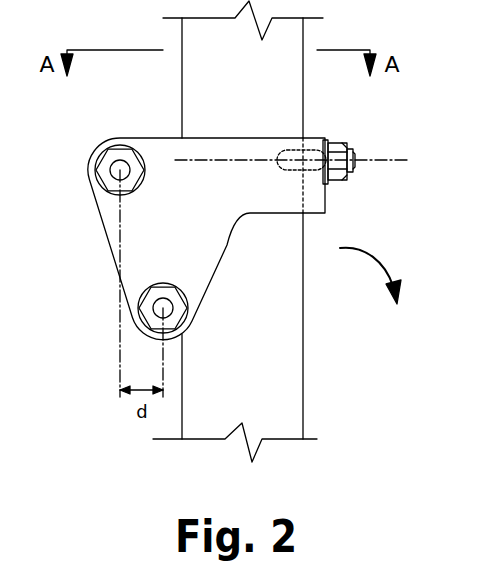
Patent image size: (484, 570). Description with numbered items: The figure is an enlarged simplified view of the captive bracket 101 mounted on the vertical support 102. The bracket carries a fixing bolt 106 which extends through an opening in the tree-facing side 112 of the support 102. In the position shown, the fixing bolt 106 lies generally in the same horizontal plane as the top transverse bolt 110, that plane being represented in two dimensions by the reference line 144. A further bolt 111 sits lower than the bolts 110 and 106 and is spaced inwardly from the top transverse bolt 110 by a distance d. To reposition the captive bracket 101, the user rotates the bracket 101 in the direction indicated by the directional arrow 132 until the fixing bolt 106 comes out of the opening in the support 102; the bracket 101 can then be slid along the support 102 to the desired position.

The captive bracket 101 is at (203, 218).
The support 102 is at (218, 380).
The fixing bolt 106 is at (321, 158).
The top transverse bolt 110 is at (111, 152).
The bolt 111 is at (157, 290).
The tree-facing side 112 is at (303, 350).
The directional arrow 132 is at (372, 253).
The reference line 144 is at (393, 160).